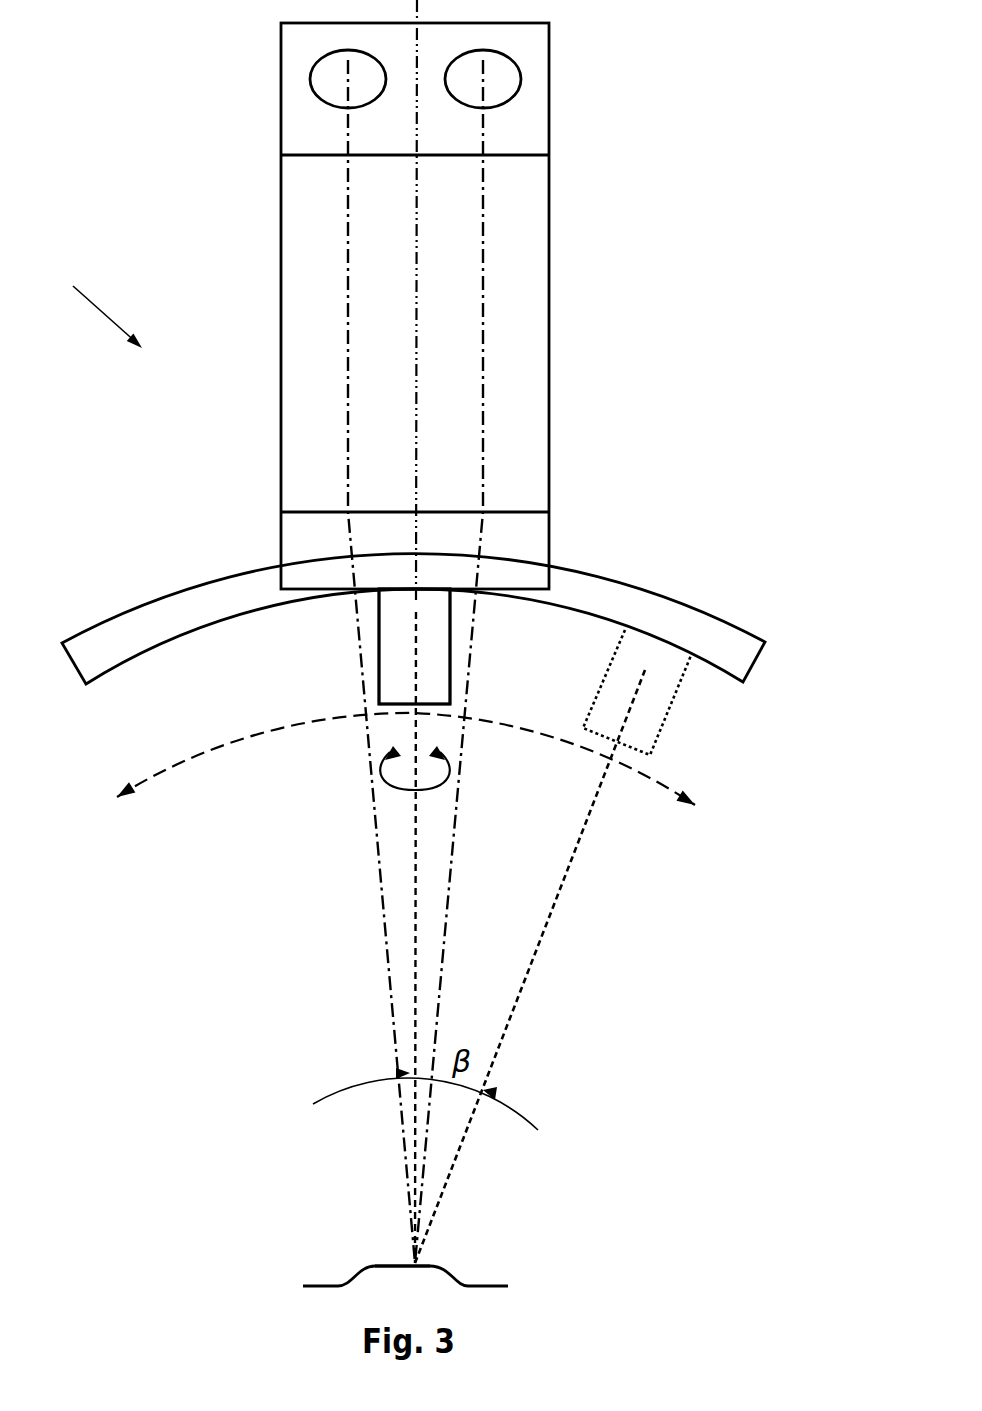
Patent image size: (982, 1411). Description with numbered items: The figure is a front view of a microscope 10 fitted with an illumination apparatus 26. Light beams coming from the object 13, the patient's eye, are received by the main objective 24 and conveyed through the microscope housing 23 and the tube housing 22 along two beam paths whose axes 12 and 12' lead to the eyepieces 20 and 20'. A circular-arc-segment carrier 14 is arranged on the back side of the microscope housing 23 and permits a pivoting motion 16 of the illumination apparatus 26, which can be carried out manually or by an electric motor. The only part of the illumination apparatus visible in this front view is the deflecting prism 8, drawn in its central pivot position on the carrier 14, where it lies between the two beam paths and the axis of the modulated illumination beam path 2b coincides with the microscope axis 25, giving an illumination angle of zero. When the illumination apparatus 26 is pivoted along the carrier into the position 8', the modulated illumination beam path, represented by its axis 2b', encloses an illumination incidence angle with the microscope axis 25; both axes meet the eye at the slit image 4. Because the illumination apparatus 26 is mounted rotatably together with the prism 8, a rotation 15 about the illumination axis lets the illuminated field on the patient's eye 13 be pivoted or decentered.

The microscope 10 is at (94, 303).
The eyepiece 20 is at (291, 60).
The eyepiece 20' is at (542, 60).
The tube housing 22 is at (550, 122).
The microscope housing 23 is at (550, 406).
The main objective 24 is at (527, 538).
The microscope axis 25 is at (418, 262).
The beam path 12 is at (307, 661).
The beam path 12' is at (523, 661).
The circular-arc-segment carrier 14 is at (722, 640).
The illumination apparatus 26 is at (378, 652).
The deflecting prism 8 is at (466, 646).
The pivoted position of deflecting prism 8' is at (686, 692).
The rotation about axis 15 is at (385, 780).
The pivoting motion 16 is at (648, 788).
The axis of modulated illumination beam path 2b is at (483, 937).
The axis of modulated illumination beam path in pivoted position 2b' is at (549, 966).
The object, patient's eye 13 is at (310, 1286).
The slit image 4 is at (422, 1262).